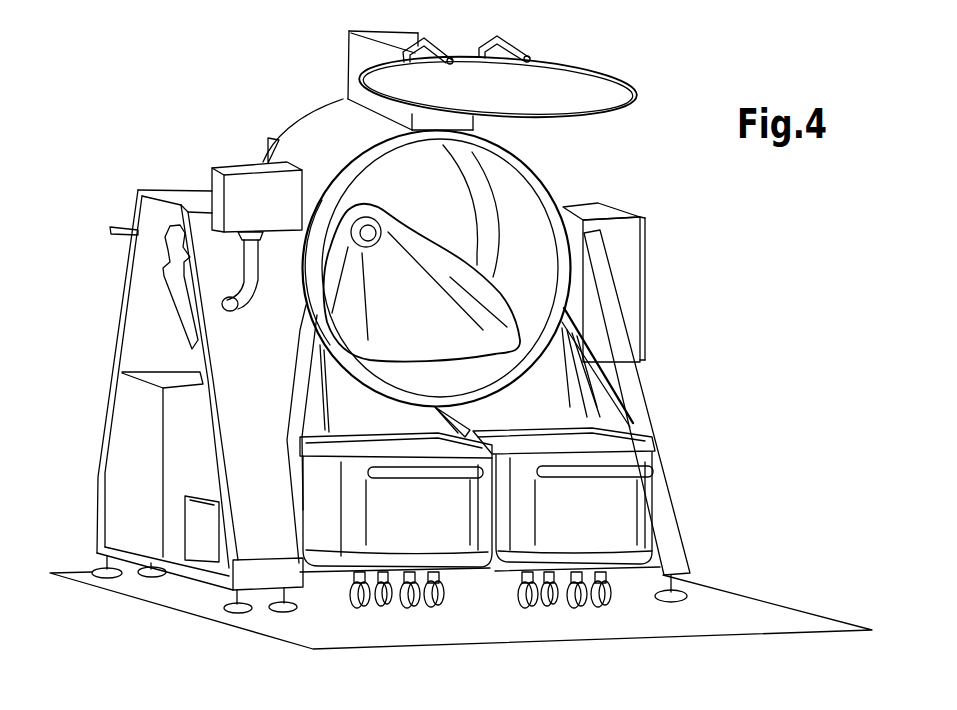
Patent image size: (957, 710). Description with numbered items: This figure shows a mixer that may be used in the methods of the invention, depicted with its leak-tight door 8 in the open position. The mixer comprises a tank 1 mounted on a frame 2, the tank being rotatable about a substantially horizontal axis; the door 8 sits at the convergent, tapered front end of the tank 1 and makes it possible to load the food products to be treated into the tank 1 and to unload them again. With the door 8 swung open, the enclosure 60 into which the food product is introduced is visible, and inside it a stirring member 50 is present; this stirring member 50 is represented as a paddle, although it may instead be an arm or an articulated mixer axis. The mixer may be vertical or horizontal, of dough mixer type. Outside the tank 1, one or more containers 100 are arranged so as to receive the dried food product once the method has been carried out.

The tank 1 is at (330, 122).
The frame 2 is at (260, 575).
The leak-tight door 8 is at (595, 82).
The stirring member 50 is at (470, 310).
The enclosure 60 is at (513, 190).
The containers 100 is at (444, 535).